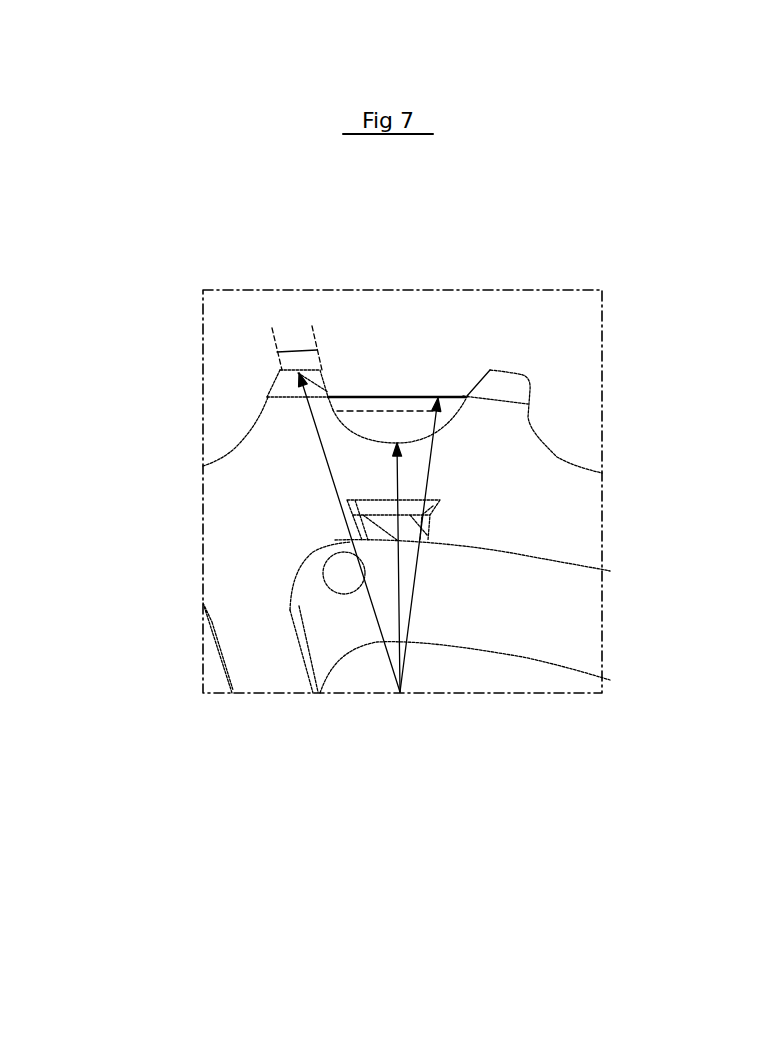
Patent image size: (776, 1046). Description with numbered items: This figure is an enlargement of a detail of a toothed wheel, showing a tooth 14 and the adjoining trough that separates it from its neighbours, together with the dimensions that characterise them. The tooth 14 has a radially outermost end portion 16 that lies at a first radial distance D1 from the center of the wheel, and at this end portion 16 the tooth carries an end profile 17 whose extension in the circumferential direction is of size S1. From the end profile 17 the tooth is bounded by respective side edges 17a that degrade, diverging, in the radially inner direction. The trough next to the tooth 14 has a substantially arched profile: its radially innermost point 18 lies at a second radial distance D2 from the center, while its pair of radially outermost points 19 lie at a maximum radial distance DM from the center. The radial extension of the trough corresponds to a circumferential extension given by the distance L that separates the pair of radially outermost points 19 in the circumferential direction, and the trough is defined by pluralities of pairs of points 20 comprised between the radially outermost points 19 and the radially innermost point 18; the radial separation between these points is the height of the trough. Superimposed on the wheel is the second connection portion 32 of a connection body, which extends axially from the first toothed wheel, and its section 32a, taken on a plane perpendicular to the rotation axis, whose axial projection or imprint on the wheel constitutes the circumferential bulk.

The tooth 14 is at (500, 418).
The radially outermost end portion 16 is at (305, 370).
The end profile 17 is at (490, 370).
The side edges 17a is at (330, 393).
The radially innermost point 18 is at (393, 445).
The radially outermost points 19 is at (345, 385).
The pairs of points 20 is at (490, 370).
The second connection portion 32 is at (440, 502).
The section of the second connection portion 32a is at (352, 498).
The size of the end profile S1 is at (293, 352).
The distance L is at (397, 393).
The first radial distance D1 is at (329, 467).
The second radial distance D2 is at (398, 597).
The maximum radial distance DM is at (437, 450).